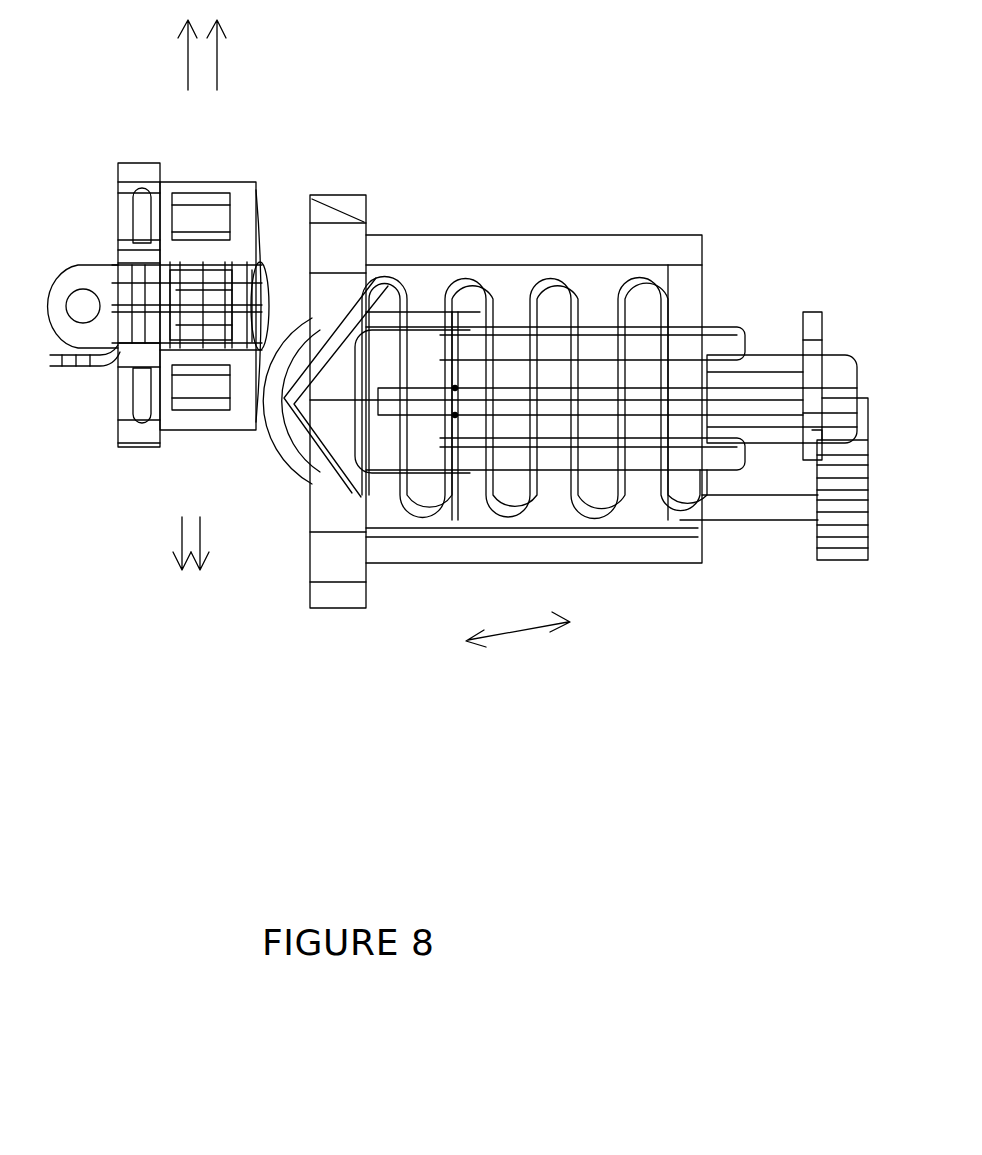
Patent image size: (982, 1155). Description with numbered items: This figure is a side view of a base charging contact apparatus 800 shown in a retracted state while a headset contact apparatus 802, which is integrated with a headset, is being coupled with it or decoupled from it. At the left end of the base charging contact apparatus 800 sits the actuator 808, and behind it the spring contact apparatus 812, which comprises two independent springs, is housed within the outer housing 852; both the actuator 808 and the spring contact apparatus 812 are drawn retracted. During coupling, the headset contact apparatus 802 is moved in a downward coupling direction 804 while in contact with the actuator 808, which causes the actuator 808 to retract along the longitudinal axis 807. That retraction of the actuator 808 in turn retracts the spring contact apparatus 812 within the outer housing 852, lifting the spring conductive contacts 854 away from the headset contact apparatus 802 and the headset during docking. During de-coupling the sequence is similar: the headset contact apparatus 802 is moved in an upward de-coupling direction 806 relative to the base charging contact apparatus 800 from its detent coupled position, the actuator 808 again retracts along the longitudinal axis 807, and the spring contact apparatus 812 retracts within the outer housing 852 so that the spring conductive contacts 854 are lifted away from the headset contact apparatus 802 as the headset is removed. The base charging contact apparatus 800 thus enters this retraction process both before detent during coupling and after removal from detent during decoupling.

The base charging contact apparatus 800 is at (358, 684).
The headset contact apparatus 802 is at (205, 180).
The downward coupling direction 804 is at (160, 543).
The upward de-coupling direction 806 is at (172, 55).
The longitudinal axis 807 is at (518, 647).
The actuator 808 is at (282, 460).
The spring contact apparatus 812 is at (752, 525).
The outer housing 852 is at (505, 233).
The spring conductive contacts 854 is at (282, 372).